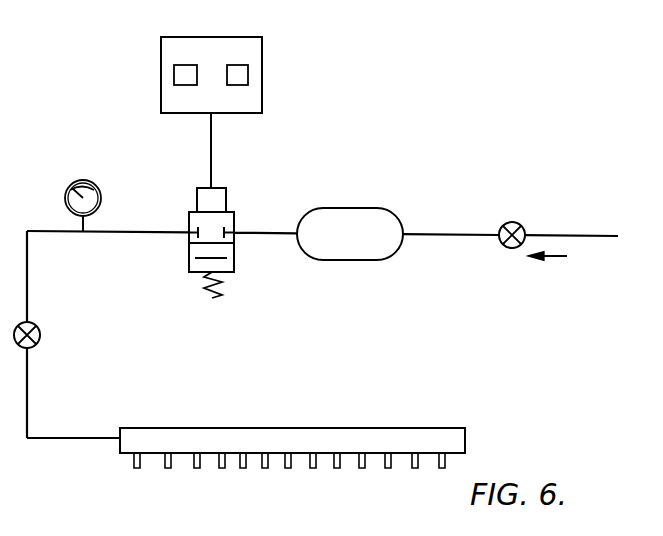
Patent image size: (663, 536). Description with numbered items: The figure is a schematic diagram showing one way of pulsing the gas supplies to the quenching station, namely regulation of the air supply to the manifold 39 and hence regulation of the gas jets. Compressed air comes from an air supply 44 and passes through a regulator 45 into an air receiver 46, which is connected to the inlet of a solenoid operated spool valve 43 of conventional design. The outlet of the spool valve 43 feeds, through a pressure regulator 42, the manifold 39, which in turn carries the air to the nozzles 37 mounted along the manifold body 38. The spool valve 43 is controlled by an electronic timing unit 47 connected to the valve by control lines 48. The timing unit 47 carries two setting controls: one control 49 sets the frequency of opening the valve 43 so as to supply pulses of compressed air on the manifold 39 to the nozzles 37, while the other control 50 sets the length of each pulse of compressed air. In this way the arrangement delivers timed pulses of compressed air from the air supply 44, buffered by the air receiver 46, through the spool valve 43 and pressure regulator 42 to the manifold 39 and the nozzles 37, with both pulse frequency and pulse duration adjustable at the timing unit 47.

The nozzles 37 is at (222, 468).
The manifold 38 is at (352, 428).
The manifold 39 is at (70, 436).
The pressure regulator 42 is at (40, 328).
The solenoid operated spool valve 43 is at (235, 218).
The air supply 44 is at (572, 233).
The regulator 45 is at (507, 222).
The air receiver 46 is at (390, 220).
The electronic timing unit 47 is at (257, 102).
The control lines 48 is at (211, 147).
The setting control 49 is at (174, 72).
The setting control 50 is at (248, 72).